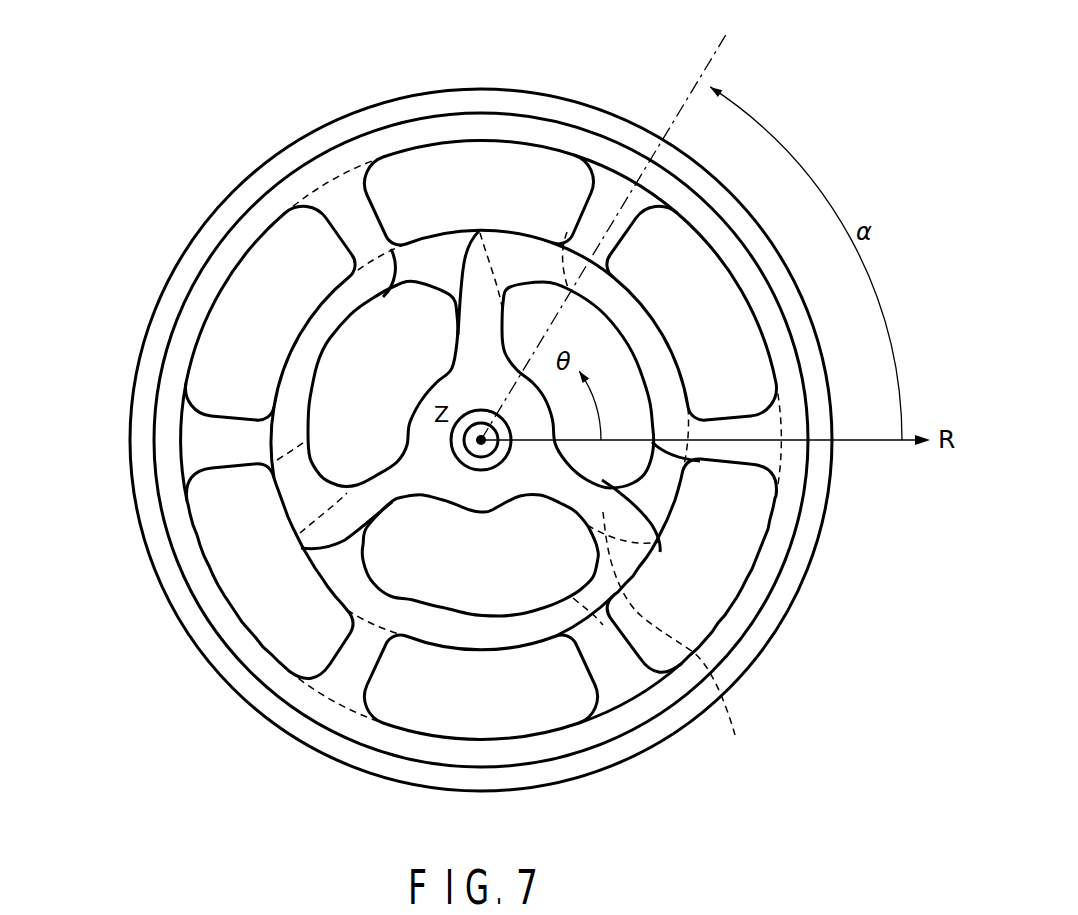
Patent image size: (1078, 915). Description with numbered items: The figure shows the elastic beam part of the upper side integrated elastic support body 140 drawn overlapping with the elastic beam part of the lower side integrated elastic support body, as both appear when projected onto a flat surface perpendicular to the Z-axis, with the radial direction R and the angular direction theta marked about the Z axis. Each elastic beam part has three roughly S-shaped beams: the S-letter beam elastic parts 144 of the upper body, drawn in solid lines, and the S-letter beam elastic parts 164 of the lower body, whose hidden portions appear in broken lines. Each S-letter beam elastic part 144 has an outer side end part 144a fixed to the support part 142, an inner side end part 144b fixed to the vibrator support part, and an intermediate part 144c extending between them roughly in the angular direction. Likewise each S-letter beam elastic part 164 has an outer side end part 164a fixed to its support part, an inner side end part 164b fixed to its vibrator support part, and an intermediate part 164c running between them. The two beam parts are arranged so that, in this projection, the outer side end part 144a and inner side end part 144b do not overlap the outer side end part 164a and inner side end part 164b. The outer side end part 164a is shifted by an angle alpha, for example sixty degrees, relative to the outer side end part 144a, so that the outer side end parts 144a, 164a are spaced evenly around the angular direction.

The upper side integrated elastic support body 140 is at (223, 165).
The support part 142 is at (152, 484).
The S-letter beam elastic part 144 is at (670, 335).
The outer side end part 144a is at (740, 452).
The inner side end part 144b is at (467, 262).
The intermediate part 144c is at (640, 332).
The S-letter beam elastic part 164 is at (417, 263).
The outer side end part 164a is at (605, 220).
The inner side end part 164b is at (664, 639).
The intermediate part 164c is at (670, 498).